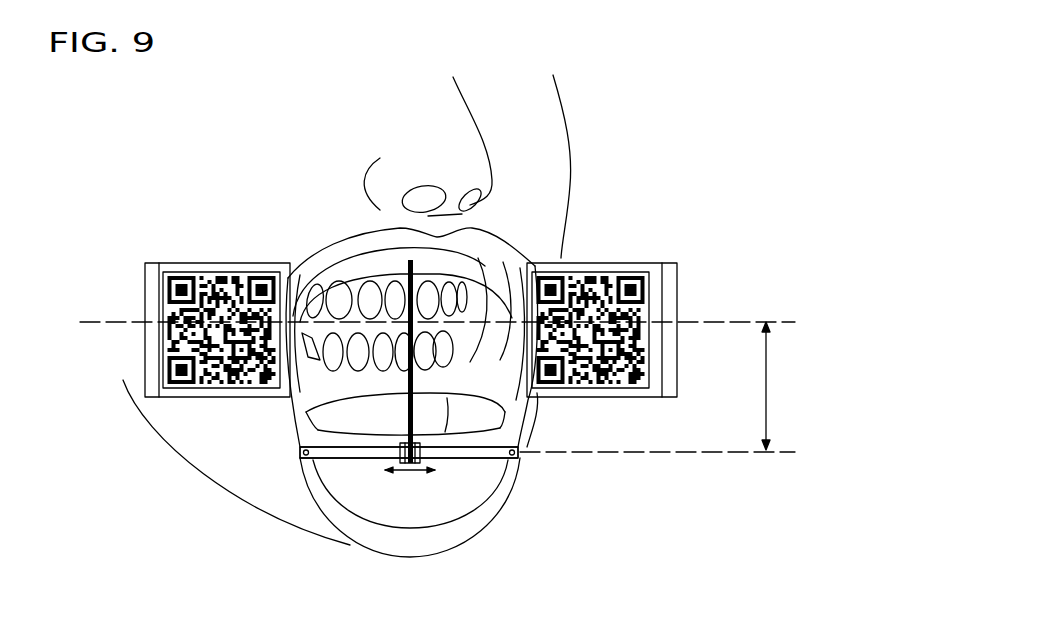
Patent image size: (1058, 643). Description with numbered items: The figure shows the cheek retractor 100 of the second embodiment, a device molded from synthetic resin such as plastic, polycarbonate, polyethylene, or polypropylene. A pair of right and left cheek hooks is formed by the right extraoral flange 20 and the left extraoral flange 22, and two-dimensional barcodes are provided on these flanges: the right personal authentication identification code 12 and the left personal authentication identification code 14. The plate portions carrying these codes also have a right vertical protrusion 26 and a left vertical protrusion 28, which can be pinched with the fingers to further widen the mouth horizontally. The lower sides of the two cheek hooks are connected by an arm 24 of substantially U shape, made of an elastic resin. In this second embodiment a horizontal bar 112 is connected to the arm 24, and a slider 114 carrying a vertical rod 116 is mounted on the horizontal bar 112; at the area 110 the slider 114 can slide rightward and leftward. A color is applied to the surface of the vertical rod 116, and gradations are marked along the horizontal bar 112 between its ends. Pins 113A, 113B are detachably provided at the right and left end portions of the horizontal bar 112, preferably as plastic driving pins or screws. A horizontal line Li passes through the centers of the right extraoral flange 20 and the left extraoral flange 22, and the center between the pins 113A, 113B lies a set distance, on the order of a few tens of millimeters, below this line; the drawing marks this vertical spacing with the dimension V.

The cheek retractor 100 is at (592, 188).
The right personal authentication identification code 12 is at (180, 272).
The left personal authentication identification code 14 is at (603, 272).
The right extraoral flange 20 is at (290, 273).
The left extraoral flange 22 is at (530, 260).
The arm 24 is at (415, 553).
The right vertical protrusion 26 is at (152, 291).
The left vertical protrusion 28 is at (670, 293).
The area 110 is at (372, 468).
The horizontal bar 112 is at (458, 462).
The pin 113A is at (304, 452).
The pin 113B is at (525, 453).
The slider 114 is at (402, 464).
The vertical rod 116 is at (408, 262).
The horizontal line Li is at (745, 320).
The vertical distance V is at (775, 386).